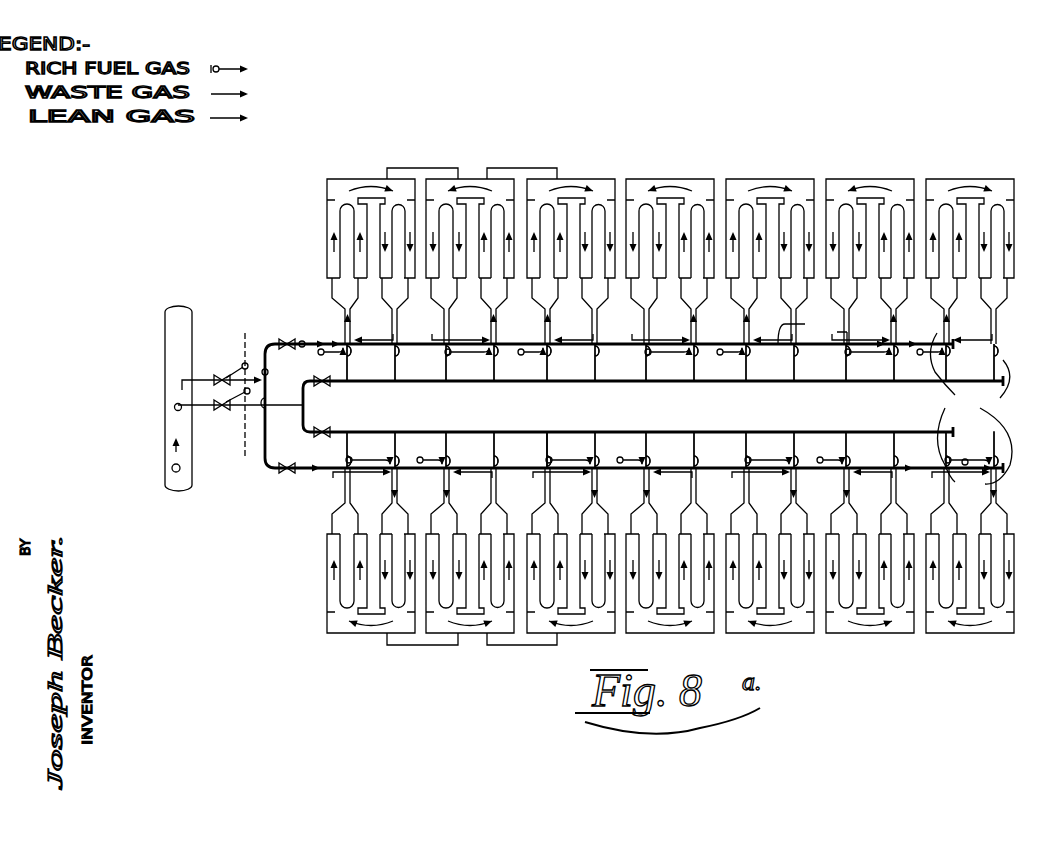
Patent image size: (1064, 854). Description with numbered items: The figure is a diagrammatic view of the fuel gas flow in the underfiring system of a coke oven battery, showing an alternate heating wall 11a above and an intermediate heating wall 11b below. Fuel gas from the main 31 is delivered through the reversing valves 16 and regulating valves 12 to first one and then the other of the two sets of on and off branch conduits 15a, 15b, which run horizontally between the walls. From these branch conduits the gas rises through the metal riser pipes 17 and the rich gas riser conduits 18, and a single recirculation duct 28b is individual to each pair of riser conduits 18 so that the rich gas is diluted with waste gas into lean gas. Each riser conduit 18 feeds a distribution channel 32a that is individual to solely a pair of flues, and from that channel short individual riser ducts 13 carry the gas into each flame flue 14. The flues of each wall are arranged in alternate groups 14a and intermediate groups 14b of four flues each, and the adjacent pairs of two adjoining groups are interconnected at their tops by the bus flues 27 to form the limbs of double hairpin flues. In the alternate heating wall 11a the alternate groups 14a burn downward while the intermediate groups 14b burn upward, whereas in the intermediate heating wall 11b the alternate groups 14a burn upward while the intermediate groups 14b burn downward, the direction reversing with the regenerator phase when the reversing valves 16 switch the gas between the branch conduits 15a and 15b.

The alternate heating wall 11a is at (614, 409).
The intermediate heating wall 11b is at (330, 572).
The regulating valve 12 is at (290, 340).
The riser duct 13 is at (398, 282).
The flame flue 14 is at (963, 217).
The alternate flue group 14a is at (356, 662).
The intermediate flue group 14b is at (492, 662).
The branch conduit 15a is at (425, 382).
The branch conduit 15b is at (338, 465).
The reversing valve 16 is at (210, 397).
The metal riser pipe 17 is at (971, 408).
The rich gas riser conduit 18 is at (546, 431).
The horizontal bus channel 27 is at (643, 188).
The recirculation duct 28b is at (700, 488).
The fuel gas main 31 is at (168, 432).
The distribution channel 32a is at (346, 304).